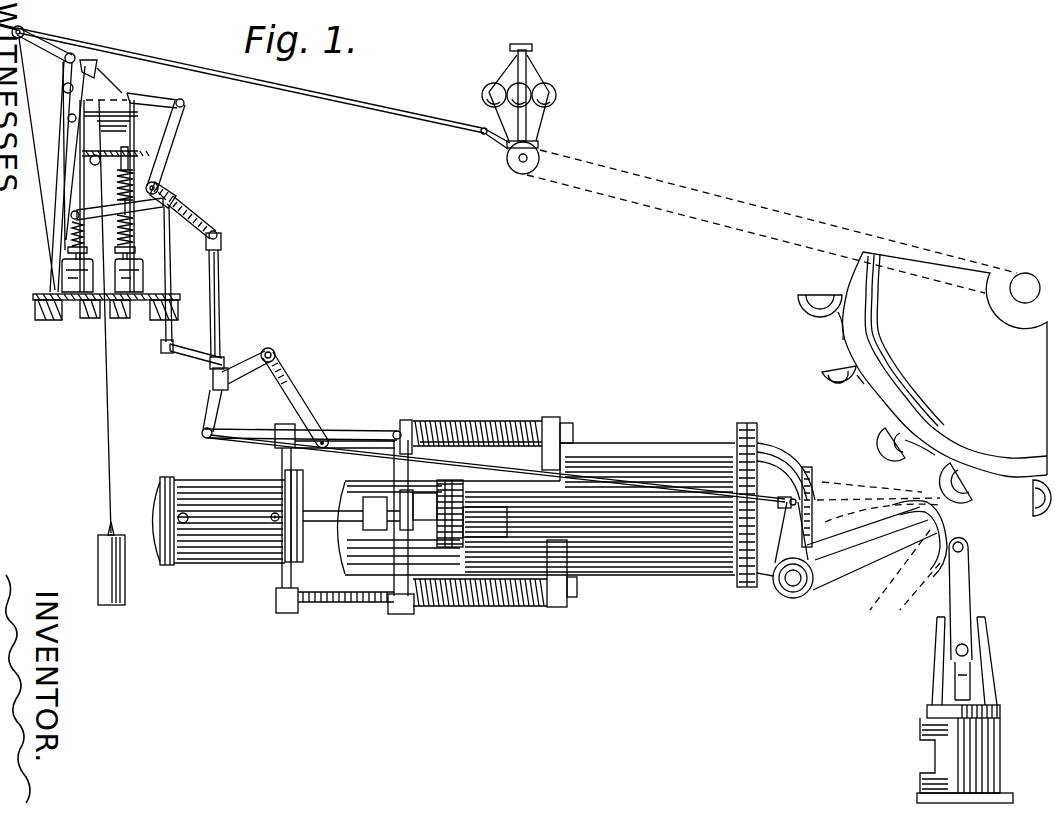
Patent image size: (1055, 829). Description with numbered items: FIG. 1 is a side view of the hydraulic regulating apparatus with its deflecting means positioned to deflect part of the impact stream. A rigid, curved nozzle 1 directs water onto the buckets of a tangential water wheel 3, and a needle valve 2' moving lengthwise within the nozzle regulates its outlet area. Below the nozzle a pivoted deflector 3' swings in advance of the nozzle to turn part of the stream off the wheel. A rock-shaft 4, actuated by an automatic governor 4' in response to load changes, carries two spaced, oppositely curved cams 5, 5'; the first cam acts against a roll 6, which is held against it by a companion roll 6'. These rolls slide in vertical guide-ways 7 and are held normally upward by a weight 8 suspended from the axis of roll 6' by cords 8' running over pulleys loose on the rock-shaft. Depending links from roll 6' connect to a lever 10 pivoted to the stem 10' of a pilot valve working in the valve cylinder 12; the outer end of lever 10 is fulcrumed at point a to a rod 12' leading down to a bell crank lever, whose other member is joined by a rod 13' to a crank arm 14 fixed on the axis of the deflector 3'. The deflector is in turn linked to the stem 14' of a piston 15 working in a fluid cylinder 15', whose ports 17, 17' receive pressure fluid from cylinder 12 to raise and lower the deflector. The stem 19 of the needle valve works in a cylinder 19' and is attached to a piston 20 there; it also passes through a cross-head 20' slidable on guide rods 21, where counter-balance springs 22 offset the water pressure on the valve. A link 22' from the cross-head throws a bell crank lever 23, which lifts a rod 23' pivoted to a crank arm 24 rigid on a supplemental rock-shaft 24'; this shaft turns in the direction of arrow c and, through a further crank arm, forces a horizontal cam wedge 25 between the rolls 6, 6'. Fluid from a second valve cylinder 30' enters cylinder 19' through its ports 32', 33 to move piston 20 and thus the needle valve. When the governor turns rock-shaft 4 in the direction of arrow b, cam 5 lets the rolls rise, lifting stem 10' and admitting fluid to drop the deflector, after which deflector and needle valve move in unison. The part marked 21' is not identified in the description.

The fulcrum point a is at (60, 29).
The arrow b is at (18, 48).
The arrow c is at (173, 158).
The nozzle 1 is at (665, 443).
The needle valve 2' is at (848, 526).
The tangential water wheel 3 is at (924, 384).
The deflector 3' is at (882, 557).
The rock-shaft 4 is at (116, 76).
The automatic governor 4' is at (749, 168).
The cam 5 is at (47, 165).
The cam 5' is at (150, 93).
The roll 6 is at (54, 156).
The roll 6' is at (49, 141).
The vertical guide-ways 7 is at (82, 135).
The weight 8 is at (99, 563).
The cords 8' is at (94, 316).
The lever 10 is at (93, 230).
The pilot valve stem 10' is at (240, 236).
The valve cylinder 12 is at (135, 284).
The rod 12' is at (186, 280).
The rod 13' is at (480, 426).
The crank arm 14 is at (720, 513).
The piston stem 14' is at (980, 667).
The piston 15 is at (945, 760).
The fluid cylinder 15' is at (1000, 755).
The port 17 is at (917, 726).
The port 17' is at (914, 786).
The needle valve stem 19 is at (405, 510).
The cylinder 19' is at (228, 530).
The piston 20 is at (261, 518).
The cross-head 20' is at (396, 541).
The guide rods 21 is at (346, 614).
The bar 21' is at (352, 424).
The counter-balance springs 22 is at (488, 517).
The link 22' is at (303, 421).
The bell crank lever 23 is at (275, 398).
The rod 23' is at (243, 309).
The crank arm 24 is at (208, 217).
The supplemental rock-shaft 24' is at (193, 190).
The cam wedge 25 is at (147, 104).
The valve cylinder 30' is at (106, 286).
The port 32' is at (261, 553).
The port 33 is at (184, 513).